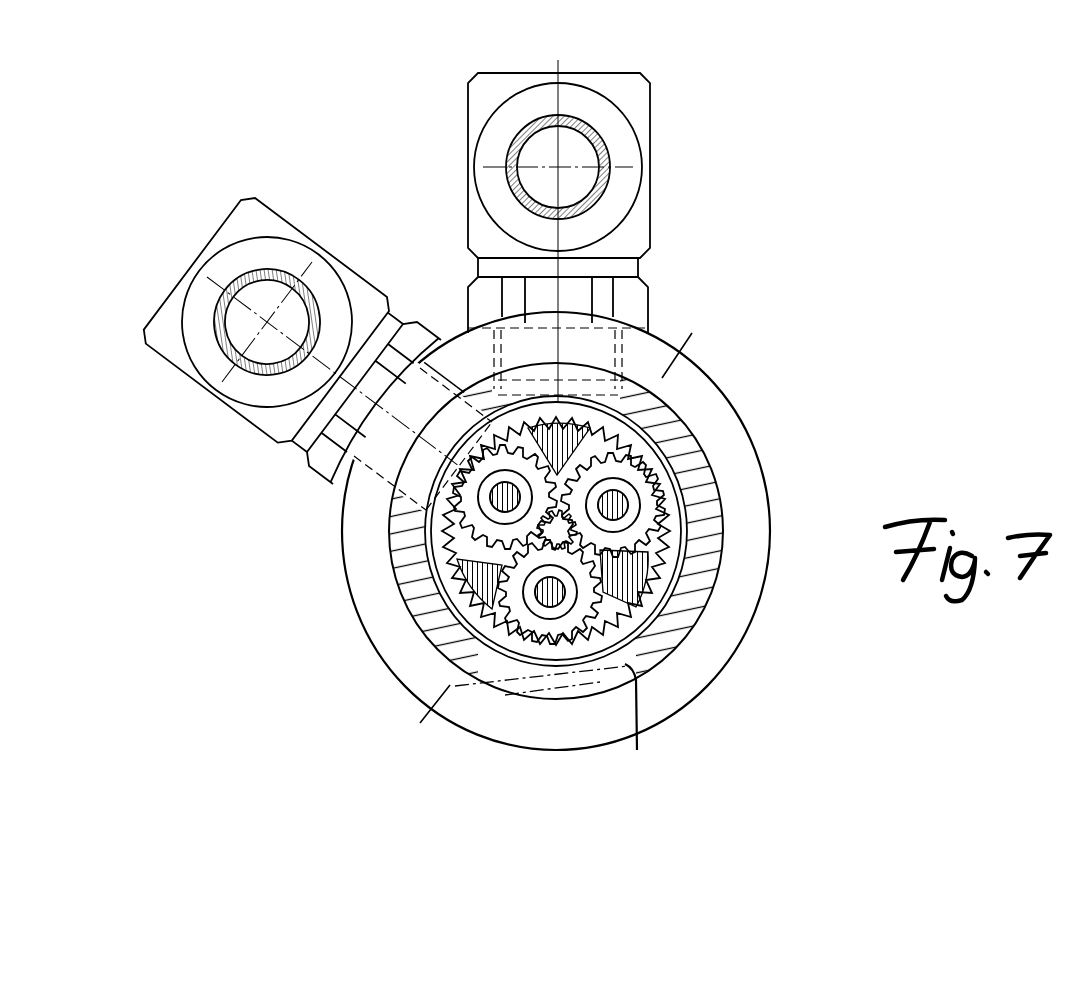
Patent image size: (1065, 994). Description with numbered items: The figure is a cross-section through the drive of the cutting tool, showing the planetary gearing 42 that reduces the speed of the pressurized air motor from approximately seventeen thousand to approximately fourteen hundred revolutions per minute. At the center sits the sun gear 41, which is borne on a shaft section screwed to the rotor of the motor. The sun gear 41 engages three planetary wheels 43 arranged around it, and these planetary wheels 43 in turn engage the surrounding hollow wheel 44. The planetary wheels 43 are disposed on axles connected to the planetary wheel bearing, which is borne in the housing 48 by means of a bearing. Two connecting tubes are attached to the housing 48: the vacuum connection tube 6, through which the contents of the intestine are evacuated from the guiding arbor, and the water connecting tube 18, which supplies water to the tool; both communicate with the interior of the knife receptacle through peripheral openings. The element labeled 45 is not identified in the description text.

The vacuum connection tube 6 is at (575, 152).
The water connecting tube 18 is at (262, 290).
The sun gear 41 is at (560, 528).
The planetary gearing 42 is at (500, 553).
The planetary wheels 43 is at (660, 497).
The hollow wheel 44 is at (648, 432).
The planet gear shaft 45 is at (563, 590).
The housing 48 is at (633, 690).